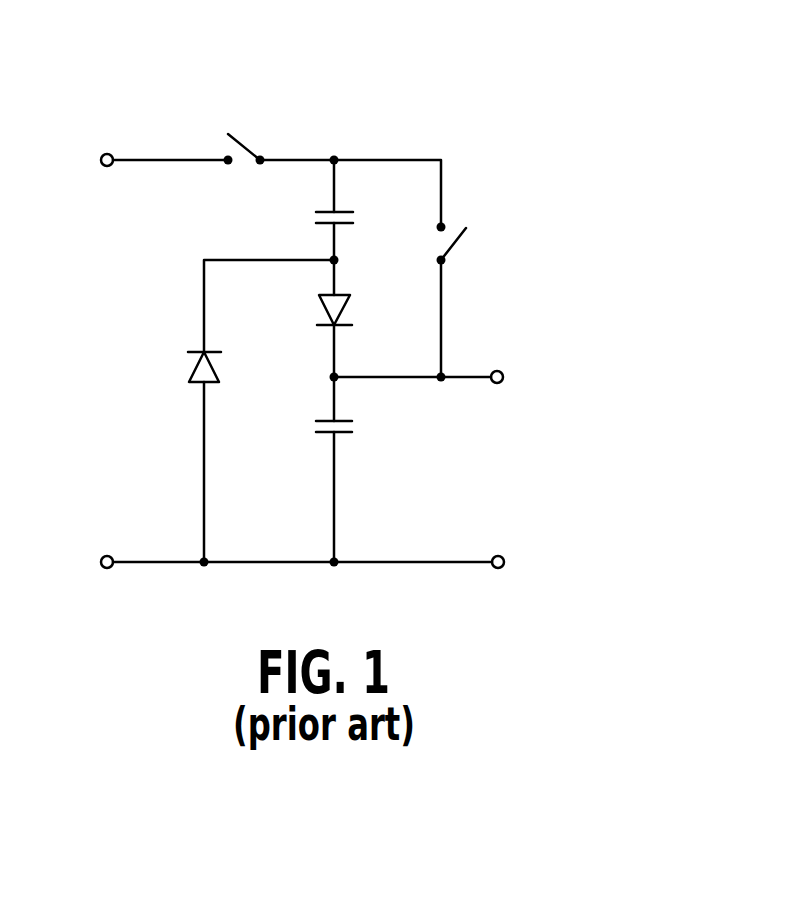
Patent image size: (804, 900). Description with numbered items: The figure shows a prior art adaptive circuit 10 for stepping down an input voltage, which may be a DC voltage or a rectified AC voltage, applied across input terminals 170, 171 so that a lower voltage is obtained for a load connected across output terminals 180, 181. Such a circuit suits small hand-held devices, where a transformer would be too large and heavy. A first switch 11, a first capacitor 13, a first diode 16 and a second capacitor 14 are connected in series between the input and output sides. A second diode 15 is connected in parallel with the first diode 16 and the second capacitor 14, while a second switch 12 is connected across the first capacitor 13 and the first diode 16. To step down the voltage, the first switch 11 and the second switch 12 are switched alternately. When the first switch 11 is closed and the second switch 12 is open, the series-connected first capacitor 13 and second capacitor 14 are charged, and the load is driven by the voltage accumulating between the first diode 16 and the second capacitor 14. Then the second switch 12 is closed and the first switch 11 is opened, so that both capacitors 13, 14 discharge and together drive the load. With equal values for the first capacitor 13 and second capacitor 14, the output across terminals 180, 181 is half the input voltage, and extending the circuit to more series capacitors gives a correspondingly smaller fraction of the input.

The prior art adaptive circuit 10 is at (459, 128).
The first switch 11 is at (250, 143).
The second switch 12 is at (460, 243).
The first capacitor 13 is at (321, 211).
The second capacitor 14 is at (343, 433).
The second diode 15 is at (196, 364).
The first diode 16 is at (343, 314).
The input terminal 170 is at (102, 154).
The input terminal 171 is at (102, 556).
The output terminal 180 is at (502, 371).
The output terminal 181 is at (503, 556).